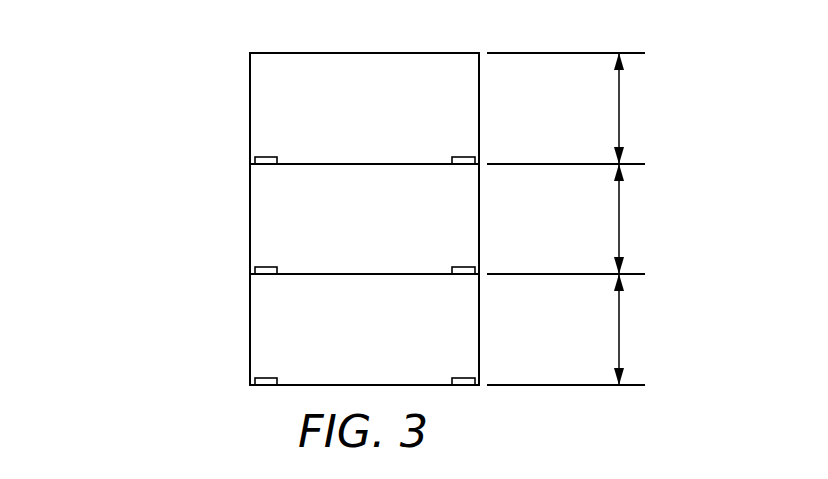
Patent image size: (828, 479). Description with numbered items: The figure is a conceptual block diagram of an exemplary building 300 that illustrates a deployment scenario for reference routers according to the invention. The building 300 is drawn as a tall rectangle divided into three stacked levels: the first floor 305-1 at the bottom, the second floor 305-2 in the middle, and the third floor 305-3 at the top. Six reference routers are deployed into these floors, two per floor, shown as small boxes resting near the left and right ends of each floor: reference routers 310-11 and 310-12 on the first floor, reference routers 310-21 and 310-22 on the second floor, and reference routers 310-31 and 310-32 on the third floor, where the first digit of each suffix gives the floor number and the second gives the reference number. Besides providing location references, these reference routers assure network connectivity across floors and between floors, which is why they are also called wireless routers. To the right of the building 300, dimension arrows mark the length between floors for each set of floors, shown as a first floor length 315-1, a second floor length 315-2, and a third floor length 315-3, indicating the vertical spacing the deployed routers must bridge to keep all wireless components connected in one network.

The building 300 is at (120, 48).
The floor F1 305-1 is at (252, 287).
The floor F2 305-2 is at (252, 177).
The floor F3 305-3 is at (252, 66).
The reference router 310-11 is at (256, 378).
The reference router 310-12 is at (475, 378).
The reference router 310-21 is at (256, 267).
The reference router 310-22 is at (475, 267).
The reference router 310-31 is at (256, 157).
The reference router 310-32 is at (475, 157).
The length between floors L1 315-1 is at (621, 304).
The length between floors L2 315-2 is at (621, 196).
The length between floors L3 315-3 is at (621, 86).